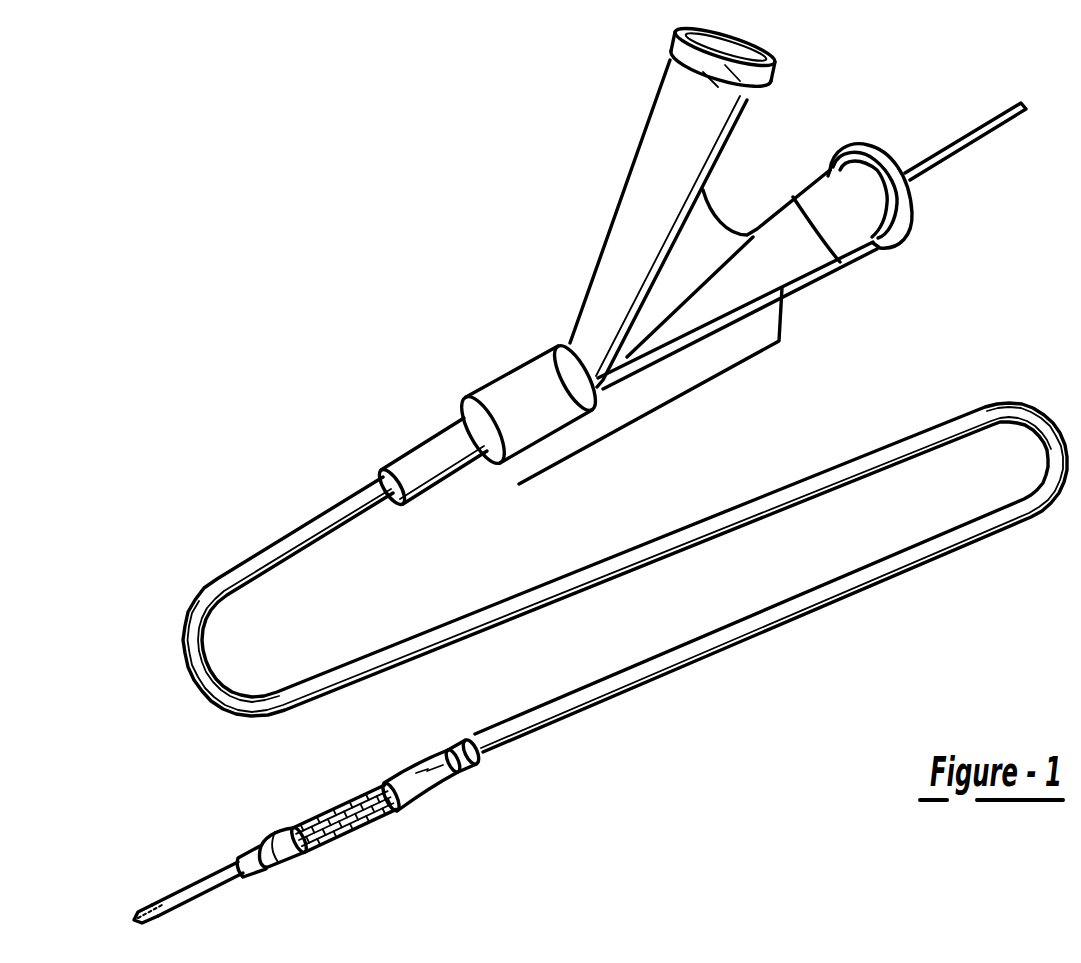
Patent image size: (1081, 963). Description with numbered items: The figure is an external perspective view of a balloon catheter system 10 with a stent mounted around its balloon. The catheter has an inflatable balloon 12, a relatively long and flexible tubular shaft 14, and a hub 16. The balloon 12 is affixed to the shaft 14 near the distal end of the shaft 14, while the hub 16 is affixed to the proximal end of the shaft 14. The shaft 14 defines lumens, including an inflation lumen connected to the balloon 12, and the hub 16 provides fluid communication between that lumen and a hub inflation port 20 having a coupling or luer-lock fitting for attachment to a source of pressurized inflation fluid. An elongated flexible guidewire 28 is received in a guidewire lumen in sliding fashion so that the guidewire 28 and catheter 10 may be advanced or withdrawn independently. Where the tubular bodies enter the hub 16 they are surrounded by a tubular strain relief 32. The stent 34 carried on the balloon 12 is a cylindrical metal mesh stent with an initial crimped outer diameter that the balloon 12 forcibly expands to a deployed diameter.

The balloon catheter system 10 is at (322, 266).
The inflatable balloon 12 is at (440, 790).
The tubular shaft 14 is at (967, 522).
The hub 16 is at (603, 217).
The hub inflation port 20 is at (748, 50).
The guidewire 28 is at (975, 140).
The tubular strain relief 32 is at (428, 450).
The stent 34 is at (366, 821).